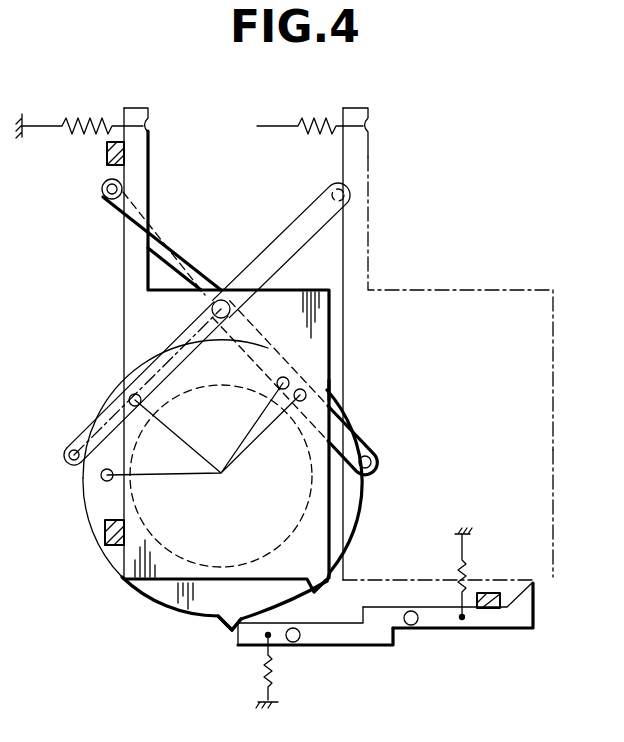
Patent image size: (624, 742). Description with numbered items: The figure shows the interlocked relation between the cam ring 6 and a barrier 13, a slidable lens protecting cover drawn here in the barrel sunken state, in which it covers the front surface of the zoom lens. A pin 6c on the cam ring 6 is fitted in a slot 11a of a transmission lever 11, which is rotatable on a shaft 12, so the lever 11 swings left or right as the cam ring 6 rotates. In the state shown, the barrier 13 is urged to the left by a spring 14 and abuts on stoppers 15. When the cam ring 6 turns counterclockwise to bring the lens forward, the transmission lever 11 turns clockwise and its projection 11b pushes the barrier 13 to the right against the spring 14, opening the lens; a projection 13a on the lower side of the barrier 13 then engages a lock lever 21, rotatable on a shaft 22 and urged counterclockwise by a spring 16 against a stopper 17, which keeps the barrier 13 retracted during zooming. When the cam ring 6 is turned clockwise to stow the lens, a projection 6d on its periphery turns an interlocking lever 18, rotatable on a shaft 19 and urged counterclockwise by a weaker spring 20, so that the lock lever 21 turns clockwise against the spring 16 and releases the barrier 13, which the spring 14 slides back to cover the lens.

The cam ring 6 is at (160, 595).
The pin 6c is at (330, 358).
The projection 6d is at (222, 622).
The transmission lever 11 is at (173, 242).
The slot 11a is at (372, 456).
The projection 11b is at (103, 198).
The shaft 12 is at (222, 300).
The barrier 13 is at (124, 304).
The projection 13a is at (553, 578).
The spring 14 is at (85, 118).
The stoppers 15 is at (107, 152).
The spring 16 is at (458, 572).
The stopper 17 is at (490, 594).
The interlocking lever 18 is at (380, 640).
The shaft 19 is at (298, 641).
The spring 20 is at (255, 672).
The lock lever 21 is at (510, 620).
The shaft 22 is at (418, 622).